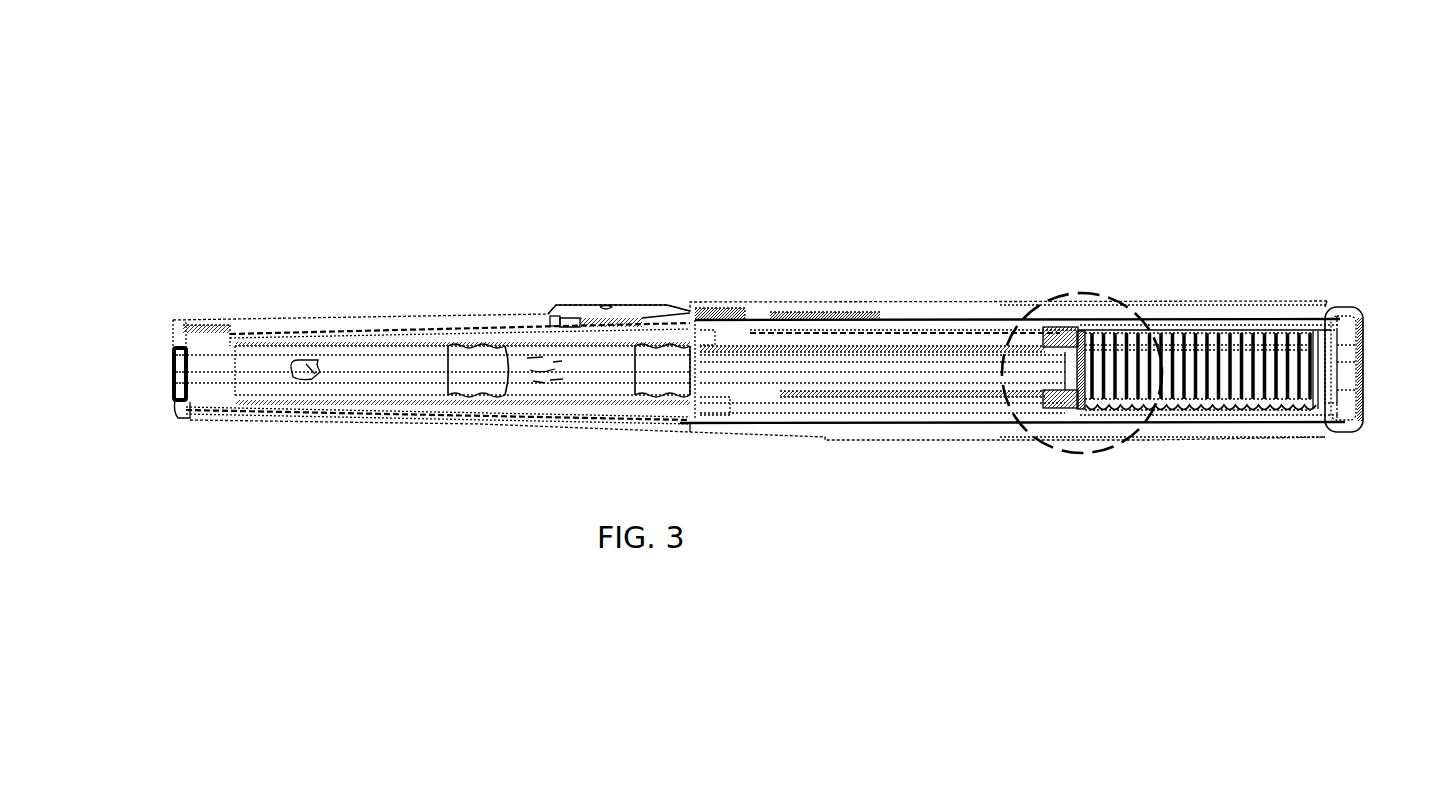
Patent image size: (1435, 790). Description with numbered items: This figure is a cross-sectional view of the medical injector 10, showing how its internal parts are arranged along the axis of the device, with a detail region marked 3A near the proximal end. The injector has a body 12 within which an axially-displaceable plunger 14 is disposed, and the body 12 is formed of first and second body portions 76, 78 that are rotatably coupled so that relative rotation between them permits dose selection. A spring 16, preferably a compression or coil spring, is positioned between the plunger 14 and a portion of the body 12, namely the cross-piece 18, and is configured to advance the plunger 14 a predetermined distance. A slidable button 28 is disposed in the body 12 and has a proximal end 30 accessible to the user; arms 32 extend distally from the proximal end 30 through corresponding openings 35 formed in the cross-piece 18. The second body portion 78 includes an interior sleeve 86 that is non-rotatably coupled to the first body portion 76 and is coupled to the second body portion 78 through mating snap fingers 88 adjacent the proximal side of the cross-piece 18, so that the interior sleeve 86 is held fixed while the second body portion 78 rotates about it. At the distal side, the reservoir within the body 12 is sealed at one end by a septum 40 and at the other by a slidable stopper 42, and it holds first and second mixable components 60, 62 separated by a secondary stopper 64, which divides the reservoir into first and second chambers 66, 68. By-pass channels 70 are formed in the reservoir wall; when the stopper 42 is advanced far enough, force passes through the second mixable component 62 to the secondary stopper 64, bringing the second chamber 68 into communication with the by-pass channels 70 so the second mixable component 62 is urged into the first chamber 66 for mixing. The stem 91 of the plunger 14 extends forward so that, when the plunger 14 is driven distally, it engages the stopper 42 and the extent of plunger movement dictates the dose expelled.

The medical injector 10 is at (962, 103).
The body 12 is at (936, 294).
The plunger 14 is at (876, 388).
The spring 16 is at (1215, 410).
The cross-piece 18 is at (1327, 350).
The slidable button 28 is at (1368, 338).
The proximal end 30 is at (1370, 368).
The arm 32 is at (1258, 325).
The openings 35 is at (1332, 342).
The septum 40 is at (176, 362).
The stopper 42 is at (668, 390).
The first mixable component 60 is at (318, 375).
The second mixable component 62 is at (555, 382).
The secondary stopper 64 is at (471, 390).
The first chamber 66 is at (388, 384).
The second chamber 68 is at (594, 382).
The by-pass channels 70 is at (395, 324).
The first body portion 76 is at (477, 311).
The second body portion 78 is at (1193, 300).
The interior sleeve 86 is at (953, 414).
The snap fingers 88 is at (1312, 400).
The stem 91 is at (808, 357).
The detail circle 3A is at (1063, 294).